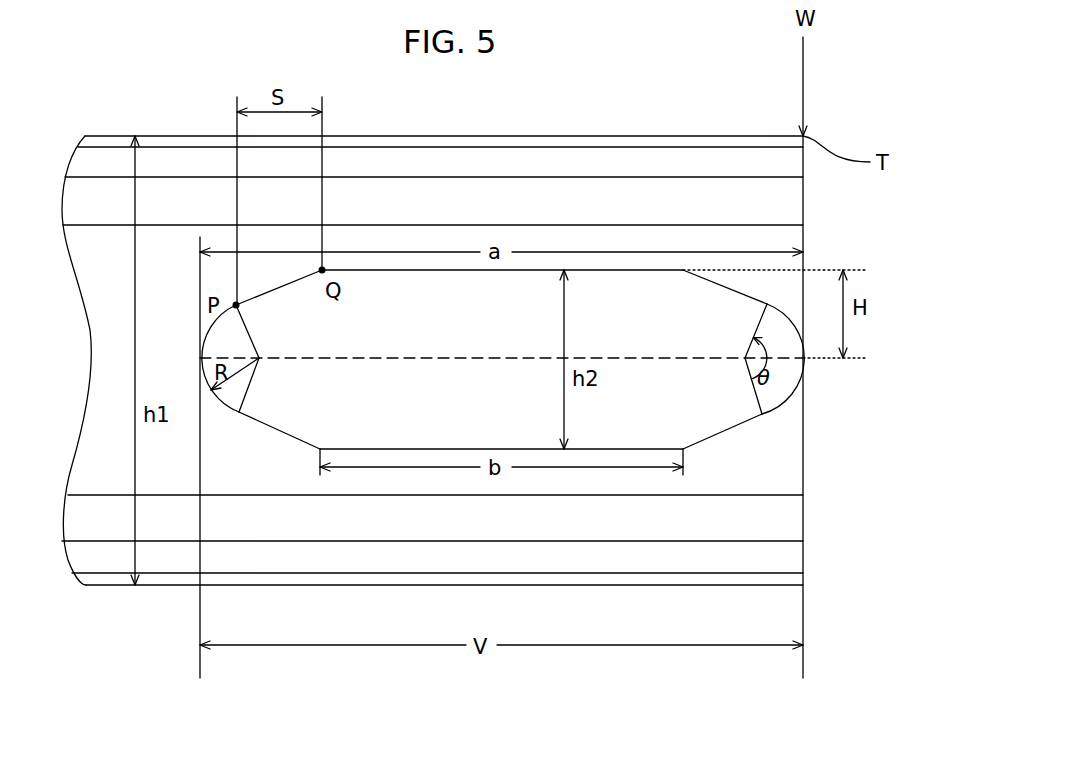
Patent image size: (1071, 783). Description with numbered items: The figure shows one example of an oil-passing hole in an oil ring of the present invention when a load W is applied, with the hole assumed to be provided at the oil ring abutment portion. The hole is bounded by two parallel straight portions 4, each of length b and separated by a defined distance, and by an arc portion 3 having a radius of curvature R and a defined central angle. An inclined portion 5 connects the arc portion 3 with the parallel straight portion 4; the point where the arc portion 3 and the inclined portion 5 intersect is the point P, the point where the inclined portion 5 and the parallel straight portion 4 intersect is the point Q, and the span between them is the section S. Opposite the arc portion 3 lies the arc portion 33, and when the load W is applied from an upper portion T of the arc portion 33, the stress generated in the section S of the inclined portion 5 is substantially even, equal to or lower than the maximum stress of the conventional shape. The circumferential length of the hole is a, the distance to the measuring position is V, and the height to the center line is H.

The arc portion 3 is at (217, 322).
The parallel straight portion 4 is at (622, 269).
The inclined portion 5 is at (268, 428).
The arc portion 33 is at (788, 400).